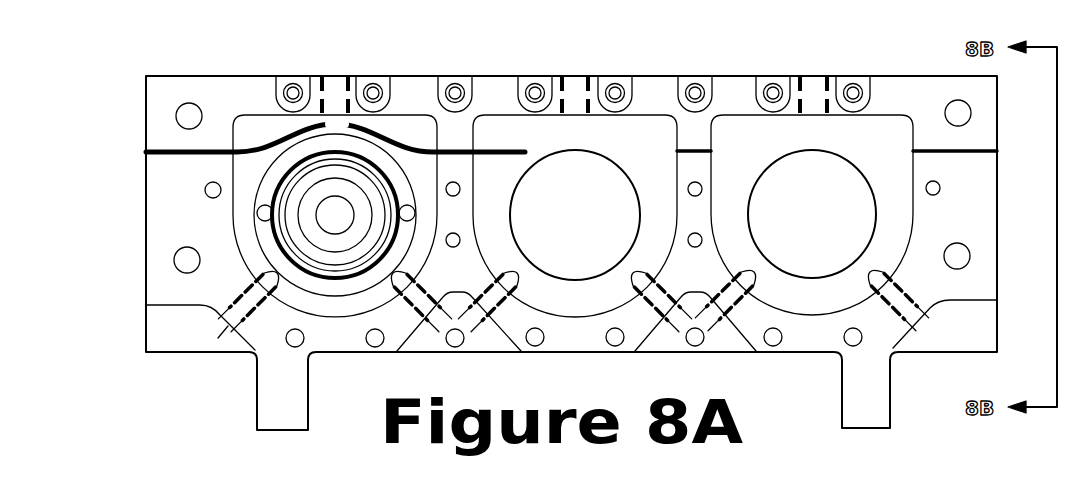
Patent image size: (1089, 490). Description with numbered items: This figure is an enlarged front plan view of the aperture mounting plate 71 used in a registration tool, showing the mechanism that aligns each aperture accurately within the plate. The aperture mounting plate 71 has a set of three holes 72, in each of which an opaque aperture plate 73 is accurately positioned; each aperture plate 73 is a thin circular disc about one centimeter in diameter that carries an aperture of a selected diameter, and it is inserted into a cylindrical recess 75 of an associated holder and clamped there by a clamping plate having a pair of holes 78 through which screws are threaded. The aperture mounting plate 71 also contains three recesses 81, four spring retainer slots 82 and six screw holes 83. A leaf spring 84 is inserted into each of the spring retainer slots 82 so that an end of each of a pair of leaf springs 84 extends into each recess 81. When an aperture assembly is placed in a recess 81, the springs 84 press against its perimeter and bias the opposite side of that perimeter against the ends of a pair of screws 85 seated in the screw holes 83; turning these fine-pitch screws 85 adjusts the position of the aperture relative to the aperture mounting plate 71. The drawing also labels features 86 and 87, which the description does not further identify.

The aperture mounting plate 71 is at (977, 277).
The holes 72 is at (693, 215).
The aperture plate 73 is at (312, 198).
The cylindrical recess 75 is at (335, 215).
The holes 78 is at (335, 237).
The recesses 81 is at (573, 216).
The spring retainer slots 82 is at (473, 150).
The screw holes 83 is at (441, 326).
The leaf spring 84 is at (250, 150).
The screws 85 is at (257, 277).
The bolt hole 86 is at (938, 194).
The bolt hole 87 is at (695, 247).